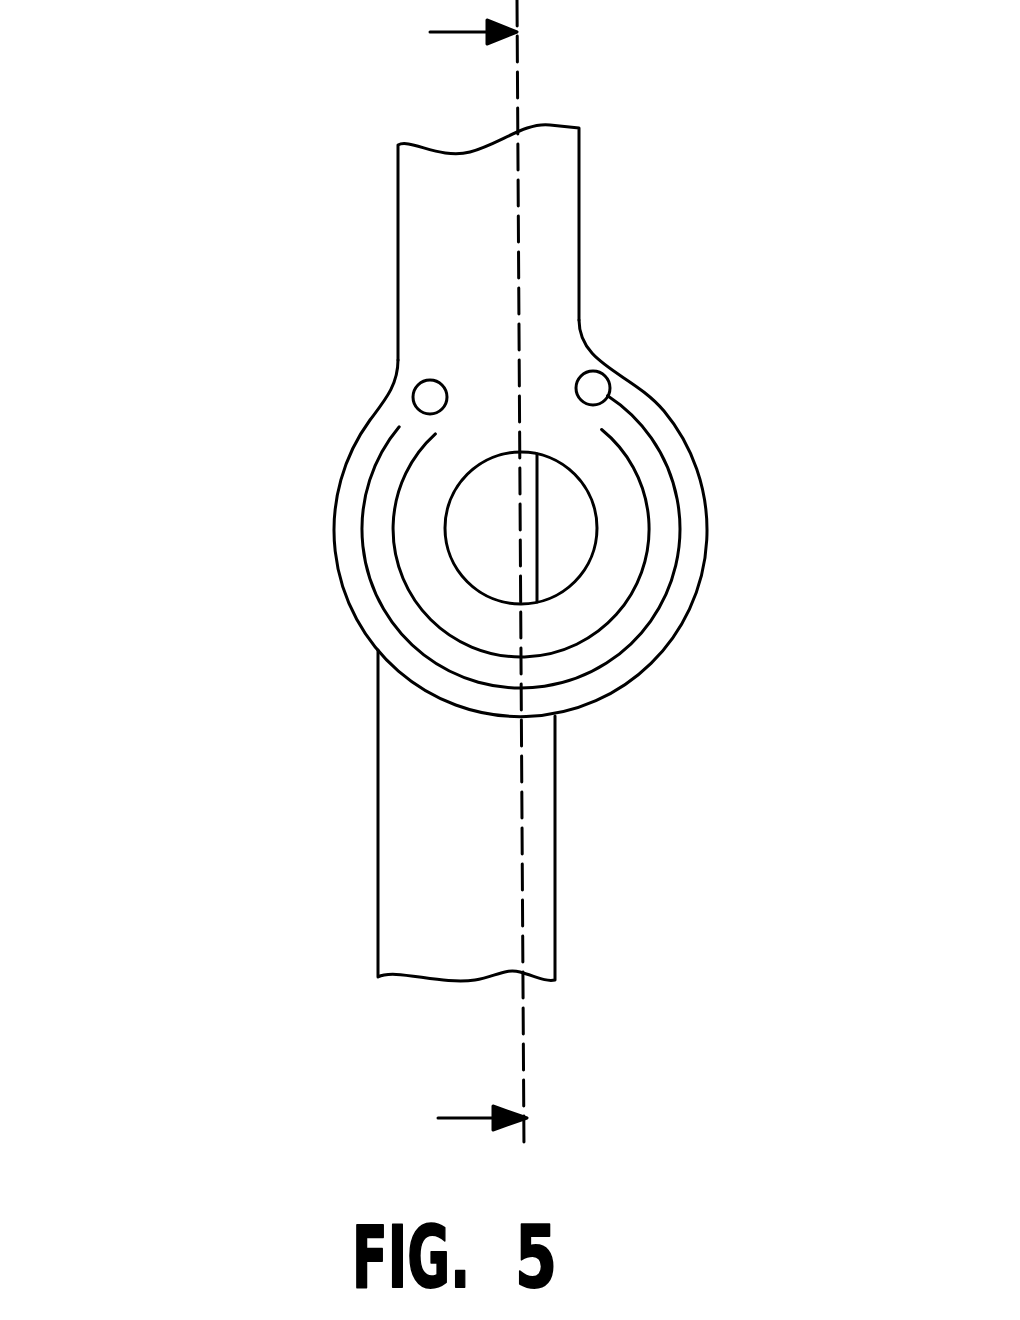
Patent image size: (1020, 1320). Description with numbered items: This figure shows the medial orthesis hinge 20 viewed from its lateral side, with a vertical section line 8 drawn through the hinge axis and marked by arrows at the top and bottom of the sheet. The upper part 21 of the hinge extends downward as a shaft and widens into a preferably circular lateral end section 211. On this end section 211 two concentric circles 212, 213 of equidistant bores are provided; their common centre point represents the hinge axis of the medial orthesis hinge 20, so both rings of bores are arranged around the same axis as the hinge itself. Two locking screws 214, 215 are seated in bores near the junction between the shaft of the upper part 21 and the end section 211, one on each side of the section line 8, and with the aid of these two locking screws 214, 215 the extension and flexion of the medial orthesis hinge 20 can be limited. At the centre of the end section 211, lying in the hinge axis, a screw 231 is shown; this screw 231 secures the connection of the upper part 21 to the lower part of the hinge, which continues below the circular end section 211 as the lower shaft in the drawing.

The section line 8- 8 is at (478, 575).
The medial orthesis hinge 20 is at (208, 975).
The upper part 21 is at (555, 198).
The lateral end section 211 is at (630, 537).
The concentric circle of equidistant bores 212 is at (667, 593).
The concentric circle of equidistant bores 213 is at (573, 650).
The locking screw 214 is at (555, 375).
The locking screw 215 is at (430, 397).
The screw 231 is at (467, 540).